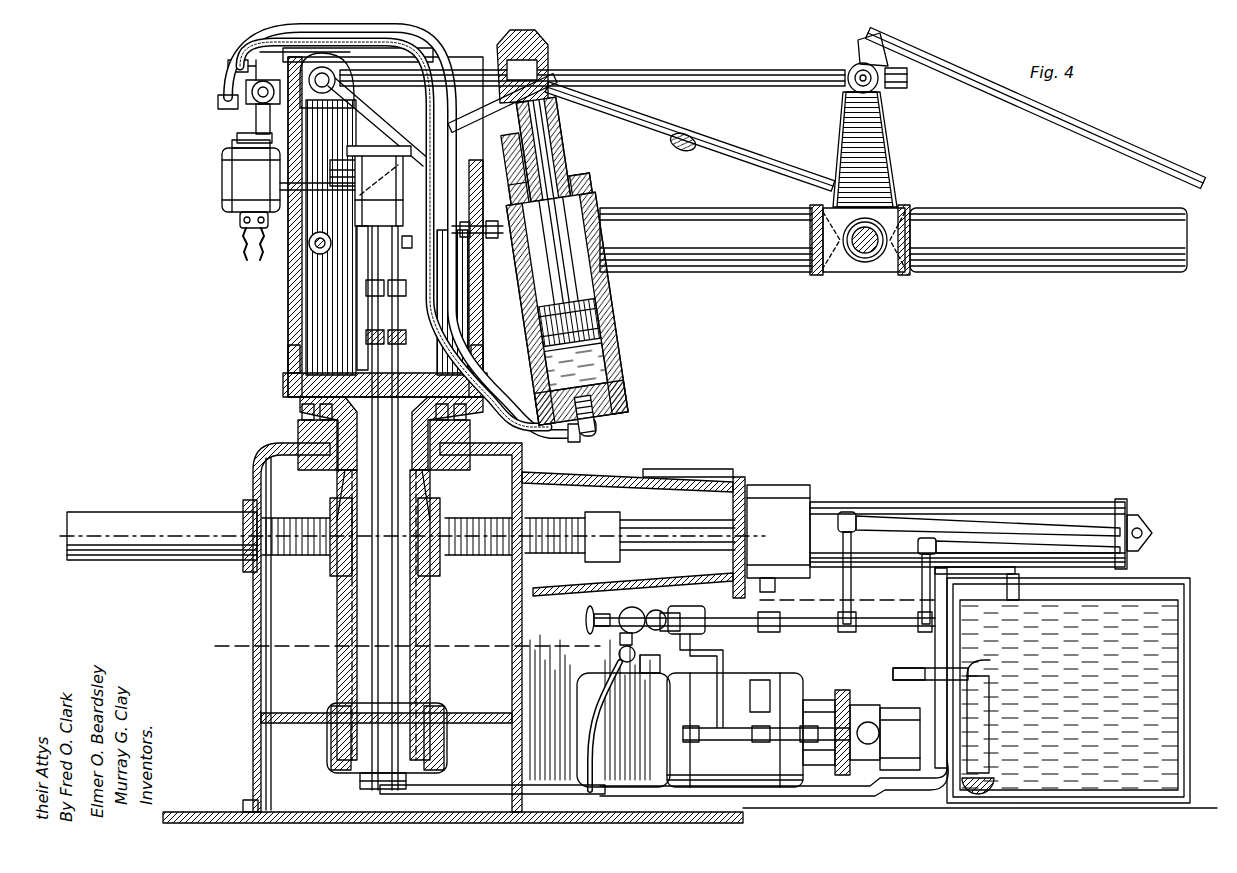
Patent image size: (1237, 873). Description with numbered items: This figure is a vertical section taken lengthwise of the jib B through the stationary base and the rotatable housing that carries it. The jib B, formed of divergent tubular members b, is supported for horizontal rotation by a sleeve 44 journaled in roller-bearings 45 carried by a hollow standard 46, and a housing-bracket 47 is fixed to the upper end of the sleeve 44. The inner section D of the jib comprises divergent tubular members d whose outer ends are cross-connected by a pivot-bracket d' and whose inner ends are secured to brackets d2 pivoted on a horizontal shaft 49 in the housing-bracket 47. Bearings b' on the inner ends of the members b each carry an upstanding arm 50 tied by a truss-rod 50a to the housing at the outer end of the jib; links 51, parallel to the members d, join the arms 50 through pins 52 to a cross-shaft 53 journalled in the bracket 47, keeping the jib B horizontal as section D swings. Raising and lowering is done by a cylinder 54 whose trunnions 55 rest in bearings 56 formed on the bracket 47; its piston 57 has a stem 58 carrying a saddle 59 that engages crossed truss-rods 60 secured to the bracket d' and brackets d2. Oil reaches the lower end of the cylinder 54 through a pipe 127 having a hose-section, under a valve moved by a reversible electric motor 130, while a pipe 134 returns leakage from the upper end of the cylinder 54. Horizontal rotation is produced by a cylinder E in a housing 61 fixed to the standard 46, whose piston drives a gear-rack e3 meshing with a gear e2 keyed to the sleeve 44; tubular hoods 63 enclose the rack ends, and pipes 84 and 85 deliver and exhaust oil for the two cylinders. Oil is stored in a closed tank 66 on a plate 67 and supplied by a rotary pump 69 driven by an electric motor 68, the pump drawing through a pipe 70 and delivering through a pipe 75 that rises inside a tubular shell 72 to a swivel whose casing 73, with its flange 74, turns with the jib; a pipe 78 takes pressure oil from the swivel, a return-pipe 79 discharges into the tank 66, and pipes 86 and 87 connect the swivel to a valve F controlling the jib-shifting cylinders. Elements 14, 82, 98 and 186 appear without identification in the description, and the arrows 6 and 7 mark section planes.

The pivot ear of housing 14 is at (400, 90).
The sleeve 44 is at (345, 490).
The roller-bearings 45 is at (318, 452).
The hollow standard 46 is at (253, 595).
The housing-bracket 47 is at (445, 162).
The horizontal shaft 49 is at (308, 246).
The upstanding arm 50 is at (896, 165).
The truss-rod 50a is at (1040, 128).
The links 51 is at (768, 87).
The pins 52 is at (852, 68).
The cross-shaft 53 is at (228, 66).
The cylinder 54 is at (606, 246).
The trunnions 55 is at (688, 150).
The bearings 56 is at (520, 256).
The piston 57 is at (606, 330).
The stem 58 is at (553, 134).
The saddle 59 is at (546, 58).
The crossed truss-rods 60 is at (652, 136).
The housing 61 is at (614, 482).
The tubular hoods 63 is at (145, 512).
The closed tank 66 is at (1068, 690).
The plate 67 is at (932, 778).
The electric motor 68 is at (752, 676).
The rotary pump 69 is at (855, 700).
The pipe 70 is at (912, 676).
The tubular shell 72 is at (402, 302).
The cylindrical casing 73 is at (412, 186).
The flange 74 is at (428, 74).
The pipe 75 is at (358, 280).
The pipe 78 is at (345, 170).
The oil return-pipe 79 is at (405, 268).
The valve 82 is at (735, 652).
The pipe 84 is at (765, 580).
The pipe 85 is at (1012, 536).
The pipe 86 is at (596, 694).
The second pipe 87 is at (660, 700).
The hub pin 98 is at (866, 258).
The pipe 127 is at (218, 88).
The electric motor 130 is at (222, 184).
The pipe 134 is at (470, 222).
The valve 186 is at (245, 100).
The jib B is at (1048, 240).
The inner section D is at (708, 272).
The divergent tubular members d is at (757, 286).
The pivot-bracket d' is at (807, 286).
The bracket d2 is at (290, 278).
The divergent tubular members b is at (1038, 288).
The bearings b' is at (909, 287).
The stationary cylinder E is at (981, 535).
The valve F is at (682, 598).
The gear e2 is at (420, 530).
The gear-rack e3 is at (556, 524).
The section line 6 is at (58, 505).
The section line 7 is at (205, 630).